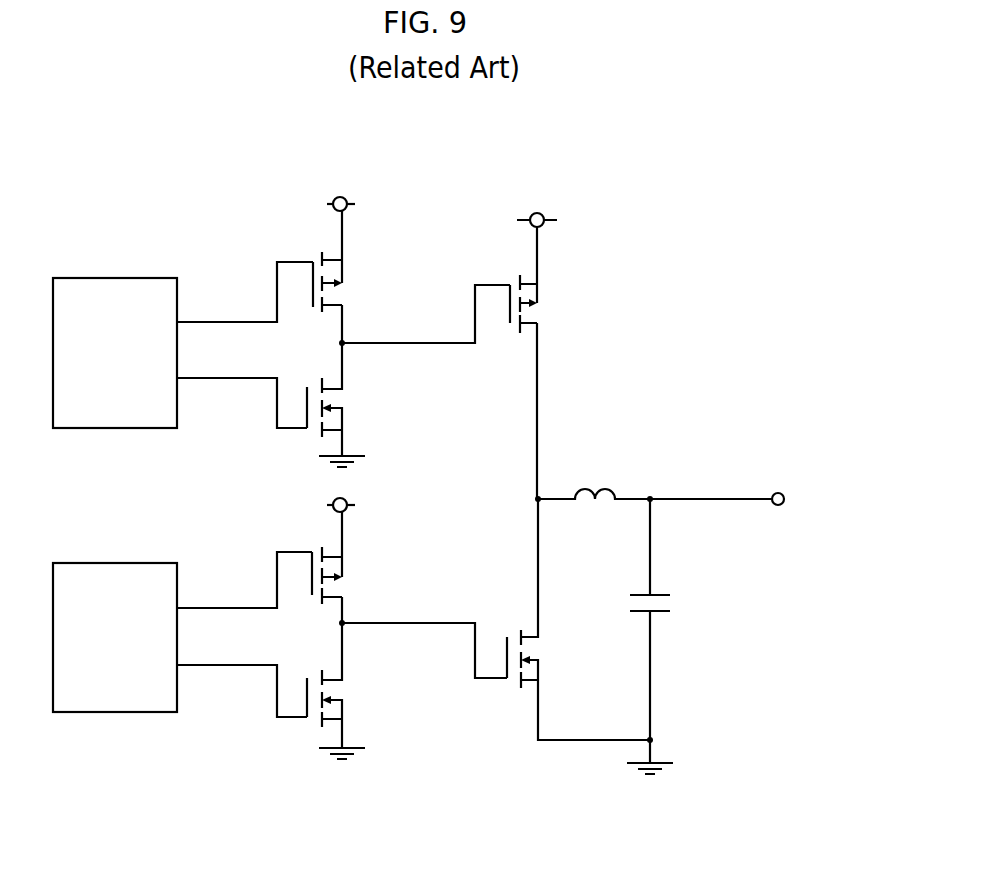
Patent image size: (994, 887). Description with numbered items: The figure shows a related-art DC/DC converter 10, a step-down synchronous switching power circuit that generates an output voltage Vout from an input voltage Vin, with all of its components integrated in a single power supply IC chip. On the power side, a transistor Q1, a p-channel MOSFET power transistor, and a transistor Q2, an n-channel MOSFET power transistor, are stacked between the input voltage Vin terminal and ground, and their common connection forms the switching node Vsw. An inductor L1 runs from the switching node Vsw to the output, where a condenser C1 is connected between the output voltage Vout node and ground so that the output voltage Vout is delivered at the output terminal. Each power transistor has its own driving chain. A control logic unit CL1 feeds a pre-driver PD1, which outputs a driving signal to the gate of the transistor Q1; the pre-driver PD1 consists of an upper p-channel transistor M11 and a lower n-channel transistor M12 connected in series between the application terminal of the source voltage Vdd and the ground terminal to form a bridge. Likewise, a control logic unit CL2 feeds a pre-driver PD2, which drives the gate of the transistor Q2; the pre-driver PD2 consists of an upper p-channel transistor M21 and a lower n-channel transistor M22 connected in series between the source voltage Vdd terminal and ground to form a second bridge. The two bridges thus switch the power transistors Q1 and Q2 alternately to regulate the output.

The DC/DC converter 10 is at (654, 124).
The control logic unit CL1 is at (165, 277).
The control logic unit CL2 is at (163, 562).
The pre-driver PD1 is at (300, 239).
The pre-driver PD2 is at (293, 542).
The transistor M11 is at (358, 277).
The transistor M12 is at (355, 405).
The transistor M21 is at (357, 567).
The transistor M22 is at (355, 691).
The transistor Q1 is at (546, 363).
The transistor Q2 is at (578, 619).
The inductor L1 is at (588, 486).
The condenser C1 is at (675, 603).
The source voltage Vdd is at (370, 356).
The input voltage Vin is at (559, 222).
The switching node Vsw is at (510, 492).
The output voltage Vout is at (780, 484).